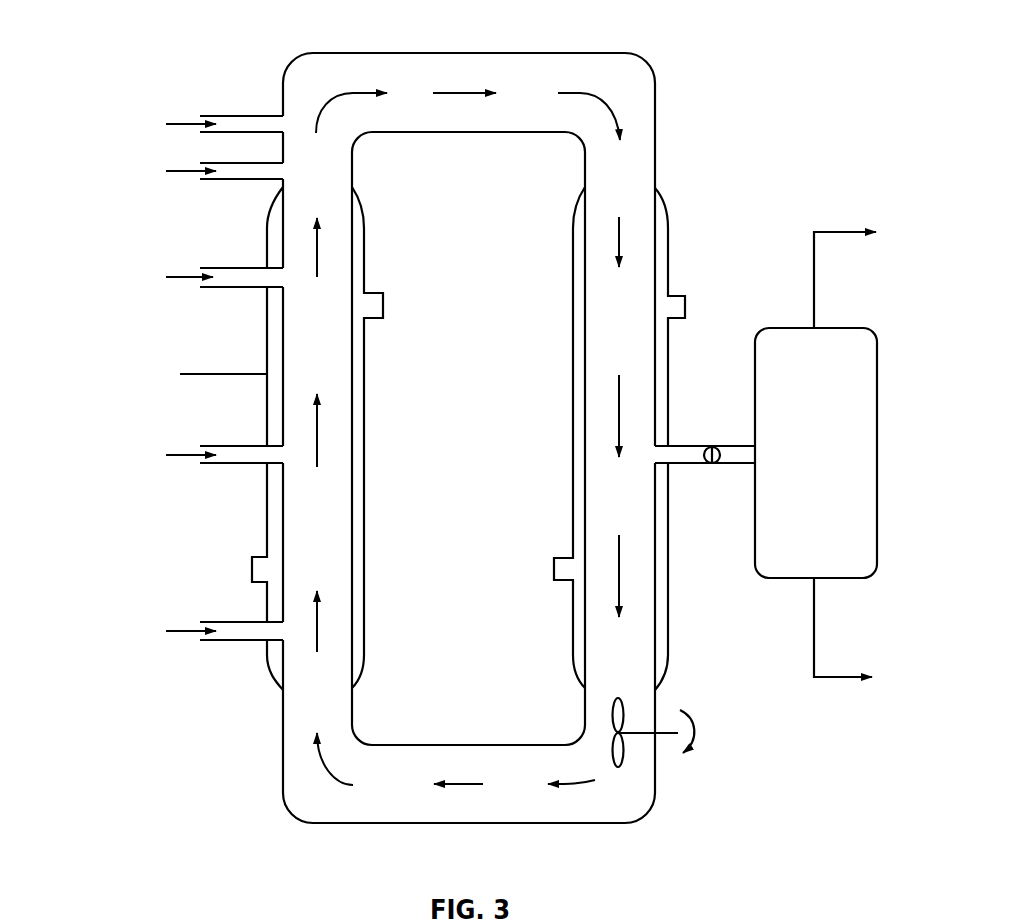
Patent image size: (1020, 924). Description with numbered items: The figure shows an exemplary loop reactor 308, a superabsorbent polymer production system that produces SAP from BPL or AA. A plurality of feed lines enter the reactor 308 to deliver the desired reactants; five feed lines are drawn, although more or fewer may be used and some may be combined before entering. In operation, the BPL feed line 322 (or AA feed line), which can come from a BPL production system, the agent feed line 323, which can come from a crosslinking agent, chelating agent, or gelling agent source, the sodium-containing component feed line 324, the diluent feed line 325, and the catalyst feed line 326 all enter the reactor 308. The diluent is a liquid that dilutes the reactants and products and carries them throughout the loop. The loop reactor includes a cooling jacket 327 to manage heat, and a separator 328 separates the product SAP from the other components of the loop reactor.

The loop reactor 308 is at (363, 53).
The catalyst feed line 326 is at (253, 116).
The diluent feed line 325 is at (255, 180).
The sodium-containing component feed line 324 is at (243, 288).
The cooling jacket 327 is at (267, 398).
The agent feed line 323 is at (238, 465).
The BPL feed line 322 is at (242, 642).
The separator 328 is at (770, 580).